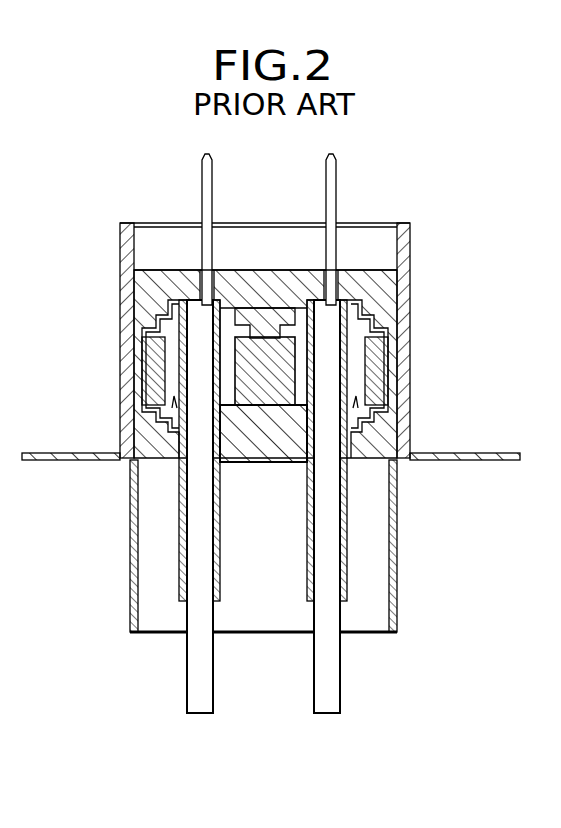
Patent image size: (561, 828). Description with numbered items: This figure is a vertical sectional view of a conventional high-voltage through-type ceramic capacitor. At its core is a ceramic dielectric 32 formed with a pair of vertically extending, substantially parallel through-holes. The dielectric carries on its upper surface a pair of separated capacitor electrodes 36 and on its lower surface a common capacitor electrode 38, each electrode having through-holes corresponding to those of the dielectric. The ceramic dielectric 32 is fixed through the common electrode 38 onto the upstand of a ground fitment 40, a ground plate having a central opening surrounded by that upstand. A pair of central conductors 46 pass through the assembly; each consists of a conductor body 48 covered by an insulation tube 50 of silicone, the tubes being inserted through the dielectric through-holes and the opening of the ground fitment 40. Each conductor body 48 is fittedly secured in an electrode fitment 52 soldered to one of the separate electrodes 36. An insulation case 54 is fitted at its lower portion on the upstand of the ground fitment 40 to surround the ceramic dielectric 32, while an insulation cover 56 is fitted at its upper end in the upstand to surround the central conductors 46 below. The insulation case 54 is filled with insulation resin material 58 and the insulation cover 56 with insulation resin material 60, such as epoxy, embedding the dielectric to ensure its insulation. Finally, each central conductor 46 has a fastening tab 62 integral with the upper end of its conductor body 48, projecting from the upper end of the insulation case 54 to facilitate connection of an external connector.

The ceramic dielectric 32 is at (142, 355).
The capacitor electrodes 36 is at (150, 325).
The common capacitor electrode 38 is at (166, 396).
The ground fitment 40 is at (97, 452).
The central conductors 46 is at (162, 647).
The conductor body 48 is at (187, 690).
The insulation tube 50 is at (180, 548).
The electrode fitment 52 is at (138, 282).
The insulation case 54 is at (411, 230).
The insulation cover 56 is at (397, 555).
The insulation resin material 58 is at (270, 268).
The insulation resin material 60 is at (287, 456).
The fastening tab 62 is at (201, 207).